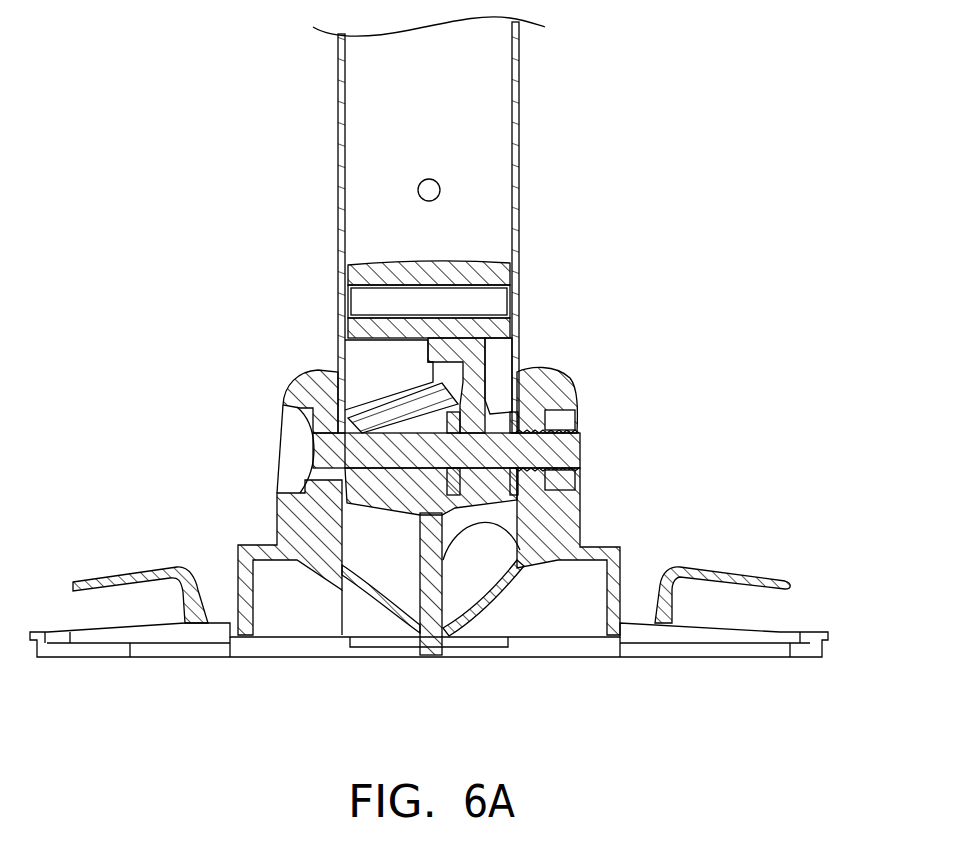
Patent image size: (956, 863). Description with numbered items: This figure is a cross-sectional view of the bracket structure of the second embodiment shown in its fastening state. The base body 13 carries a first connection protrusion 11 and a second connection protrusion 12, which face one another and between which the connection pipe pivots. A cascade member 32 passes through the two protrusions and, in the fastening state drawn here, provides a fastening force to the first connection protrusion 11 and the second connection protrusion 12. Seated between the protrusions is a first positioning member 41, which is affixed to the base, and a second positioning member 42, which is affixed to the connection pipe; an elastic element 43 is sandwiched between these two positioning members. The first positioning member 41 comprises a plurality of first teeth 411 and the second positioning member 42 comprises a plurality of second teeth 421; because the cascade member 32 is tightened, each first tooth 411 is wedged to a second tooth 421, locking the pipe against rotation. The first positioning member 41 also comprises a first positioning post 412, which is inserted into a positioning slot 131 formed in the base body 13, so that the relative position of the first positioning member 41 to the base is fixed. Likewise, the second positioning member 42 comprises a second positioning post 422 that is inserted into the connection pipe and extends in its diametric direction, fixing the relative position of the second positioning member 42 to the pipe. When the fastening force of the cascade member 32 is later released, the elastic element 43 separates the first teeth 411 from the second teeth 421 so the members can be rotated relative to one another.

The first connection protrusion 11 is at (287, 402).
The second connection protrusion 12 is at (577, 402).
The base body 13 is at (770, 630).
The positioning slot 131 is at (425, 637).
The cascade member 32 is at (325, 455).
The first positioning member 41 is at (392, 402).
The first teeth 411 is at (522, 570).
The first positioning post 412 is at (500, 560).
The second positioning member 42 is at (490, 418).
The second teeth 421 is at (420, 518).
The second positioning post 422 is at (478, 268).
The elastic element 43 is at (578, 508).